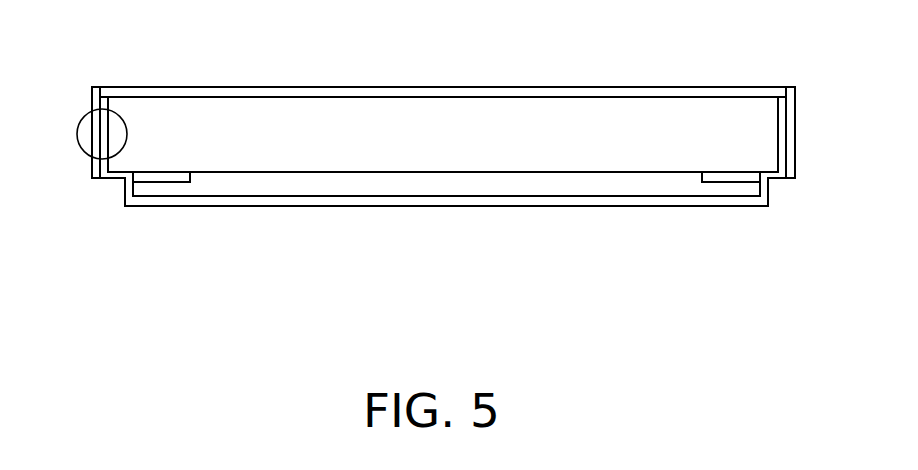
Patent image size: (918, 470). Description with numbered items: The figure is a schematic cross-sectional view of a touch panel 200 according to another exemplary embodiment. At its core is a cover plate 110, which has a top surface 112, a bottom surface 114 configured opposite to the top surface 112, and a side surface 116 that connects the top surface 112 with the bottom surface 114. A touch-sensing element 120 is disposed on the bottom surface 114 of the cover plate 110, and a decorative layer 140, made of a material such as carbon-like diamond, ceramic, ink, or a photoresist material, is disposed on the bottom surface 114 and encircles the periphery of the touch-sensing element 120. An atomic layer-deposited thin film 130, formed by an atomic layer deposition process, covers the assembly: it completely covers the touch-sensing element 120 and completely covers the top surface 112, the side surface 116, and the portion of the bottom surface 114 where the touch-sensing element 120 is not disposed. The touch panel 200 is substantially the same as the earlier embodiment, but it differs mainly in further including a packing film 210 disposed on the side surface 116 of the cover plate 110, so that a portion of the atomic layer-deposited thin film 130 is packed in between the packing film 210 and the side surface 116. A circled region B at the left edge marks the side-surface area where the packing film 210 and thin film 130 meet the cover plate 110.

The cover plate 110 is at (395, 116).
The top surface 112 is at (557, 94).
The bottom surface 114 is at (572, 175).
The side surface 116 is at (781, 112).
The touch-sensing element 120 is at (412, 185).
The atomic layer-deposited thin film 130 is at (681, 88).
The decorative layer 140 is at (169, 178).
The touch panel 200 is at (838, 292).
The packing film 210 is at (96, 98).
The enlarged region B is at (82, 150).